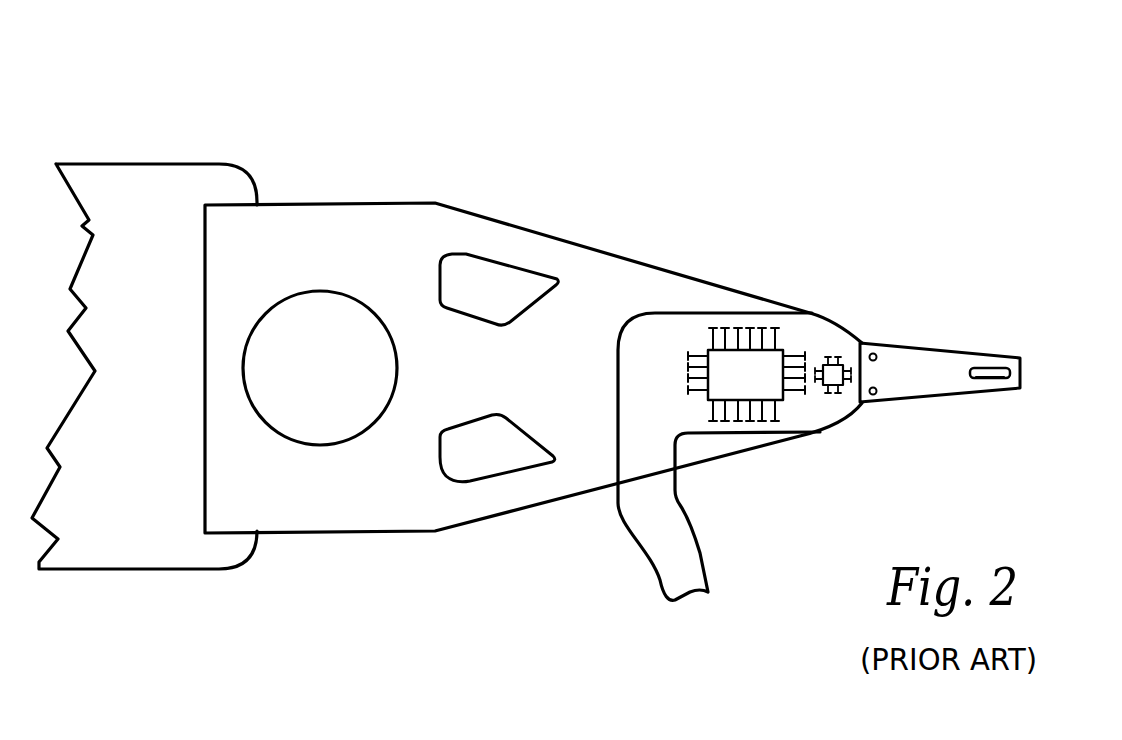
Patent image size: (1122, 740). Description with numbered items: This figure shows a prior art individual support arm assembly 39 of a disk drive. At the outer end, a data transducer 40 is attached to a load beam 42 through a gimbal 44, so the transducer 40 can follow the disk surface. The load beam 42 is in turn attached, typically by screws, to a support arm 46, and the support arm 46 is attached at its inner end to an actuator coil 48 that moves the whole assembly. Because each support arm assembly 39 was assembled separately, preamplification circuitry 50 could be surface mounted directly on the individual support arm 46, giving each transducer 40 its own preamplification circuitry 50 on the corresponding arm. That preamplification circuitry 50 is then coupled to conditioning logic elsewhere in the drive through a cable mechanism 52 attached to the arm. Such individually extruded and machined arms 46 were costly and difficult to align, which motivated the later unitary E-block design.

The support arm assembly 39 is at (418, 141).
The transducer 40 is at (1010, 358).
The load beam 42 is at (915, 377).
The gimbal 44 is at (985, 378).
The support arm 46 is at (580, 265).
The actuator coil 48 is at (110, 187).
The preamplification circuitry 50 is at (838, 365).
The cable mechanism 52 is at (700, 537).